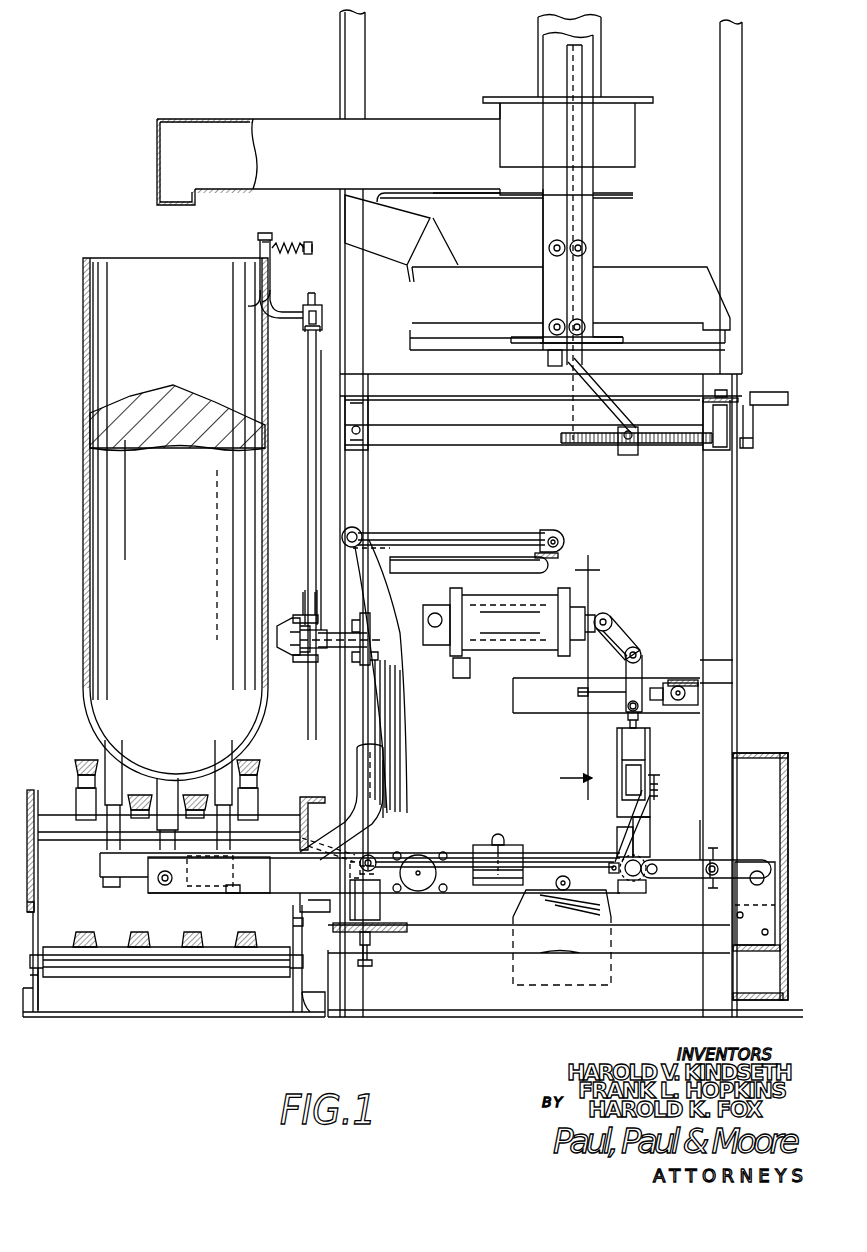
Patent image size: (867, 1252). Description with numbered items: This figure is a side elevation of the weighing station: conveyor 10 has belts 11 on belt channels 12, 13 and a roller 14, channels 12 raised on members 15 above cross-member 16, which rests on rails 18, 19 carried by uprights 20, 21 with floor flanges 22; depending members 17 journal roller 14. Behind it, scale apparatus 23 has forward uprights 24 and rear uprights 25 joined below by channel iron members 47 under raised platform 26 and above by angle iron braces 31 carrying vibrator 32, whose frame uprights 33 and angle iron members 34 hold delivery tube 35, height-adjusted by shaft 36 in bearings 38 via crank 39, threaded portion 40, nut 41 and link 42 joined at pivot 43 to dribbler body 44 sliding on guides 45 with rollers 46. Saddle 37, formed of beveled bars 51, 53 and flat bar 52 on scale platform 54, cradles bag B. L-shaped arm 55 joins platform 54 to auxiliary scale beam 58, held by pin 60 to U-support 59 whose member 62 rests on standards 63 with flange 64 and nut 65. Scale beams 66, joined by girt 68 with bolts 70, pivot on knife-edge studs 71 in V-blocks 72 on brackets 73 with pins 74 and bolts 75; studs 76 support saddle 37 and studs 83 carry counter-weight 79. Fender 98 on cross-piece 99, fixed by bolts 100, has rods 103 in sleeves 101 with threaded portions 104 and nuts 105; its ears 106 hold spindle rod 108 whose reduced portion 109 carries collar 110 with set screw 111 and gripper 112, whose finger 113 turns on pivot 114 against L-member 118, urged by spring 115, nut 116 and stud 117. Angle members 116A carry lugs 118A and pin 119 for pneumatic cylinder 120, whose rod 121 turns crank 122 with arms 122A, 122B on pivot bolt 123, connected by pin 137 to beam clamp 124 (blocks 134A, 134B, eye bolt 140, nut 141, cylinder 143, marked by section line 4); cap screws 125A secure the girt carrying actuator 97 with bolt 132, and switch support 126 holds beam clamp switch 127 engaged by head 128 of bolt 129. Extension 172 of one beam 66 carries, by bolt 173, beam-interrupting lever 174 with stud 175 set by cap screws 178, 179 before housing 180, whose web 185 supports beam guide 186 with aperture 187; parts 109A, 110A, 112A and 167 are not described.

The conveyor 10 is at (150, 998).
The belts 11 is at (94, 930).
The belt channels 12 is at (75, 768).
The belt channels 13 is at (130, 812).
The supporting rollers 14 is at (83, 968).
The members 15 is at (80, 796).
The cross-member 16 is at (62, 830).
The depending members 17 is at (36, 912).
The rail 18 is at (32, 795).
The rail 19 is at (312, 800).
The uprights 20 is at (38, 984).
The uprights 21 is at (294, 985).
The supporting floor flange 22 is at (300, 1018).
The scale apparatus 23 is at (233, 896).
The forward uprights 24 is at (358, 480).
The rear uprights 25 is at (739, 510).
The raised platform 26 is at (494, 940).
The angle iron braces 31 is at (366, 394).
The vibrator or dribbler 32 is at (612, 96).
The uprights 33 is at (340, 50).
The angle iron members 34 is at (726, 376).
The delivery tube 35 is at (205, 119).
The horizontal shaft 36 is at (488, 438).
The saddle 37 is at (100, 858).
The bearings 38 is at (360, 440).
The crank 39 is at (782, 392).
The threaded portion 40 is at (660, 446).
The nut 41 is at (626, 455).
The link 42 is at (616, 416).
The pivot 43 is at (548, 358).
The dribbler body 44 is at (598, 267).
The fixed guides 45 is at (582, 78).
The anti-friction rollers 46 is at (584, 246).
The channel iron members 47 is at (462, 996).
The bar 51 is at (116, 765).
The bar 52 is at (168, 788).
The bar 53 is at (218, 778).
The scale platform 54 is at (135, 880).
The L-shaped arm 55 is at (402, 742).
The auxiliary scale beam 58 is at (466, 537).
The U-support 59 is at (486, 556).
The pin 60 is at (553, 536).
The open end member 62 is at (396, 552).
The cylindrical standards 63 is at (358, 748).
The flange 64 is at (395, 923).
The nut 65 is at (374, 962).
The scale beams 66 is at (462, 852).
The girt 68 is at (430, 858).
The bolts 70 is at (400, 853).
The studs 71 is at (374, 860).
The V-shaped blocks 72 is at (348, 893).
The brackets 73 is at (382, 899).
The pivot pins 74 is at (350, 870).
The bolts 75 is at (363, 961).
The knife edged studs 76 is at (165, 886).
The counter-weight 79 is at (533, 915).
The knife-edged studs 83 is at (566, 876).
The beam clamp switch actuator 97 is at (628, 852).
The fender 98 is at (277, 638).
The cross-piece 99 is at (368, 666).
The bolts 100 is at (360, 660).
The sleeves 101 is at (350, 631).
The supporting rods 103 is at (375, 641).
The threaded portion 104 is at (296, 652).
The nut 105 is at (304, 616).
The ears 106 is at (312, 614).
The spindle rod 108 is at (308, 533).
The reduced portion 109 is at (318, 345).
The box 109A is at (518, 858).
The collar 110 is at (324, 313).
The rod 110A is at (536, 862).
The set screw 111 is at (308, 332).
The gripper 112 is at (258, 269).
The knob 112A is at (500, 848).
The finger 113 is at (248, 306).
The pivot 114 is at (263, 233).
The spring 115 is at (290, 245).
The nut 116 is at (311, 254).
The angle members 116A is at (688, 636).
The stud 117 is at (313, 250).
The L-member 118 is at (271, 278).
The upending lug 118A is at (430, 618).
The pin 119 is at (438, 614).
The pneumatic cylinder 120 is at (524, 604).
The rod 121 is at (606, 612).
The crank 122 is at (624, 648).
The arms 122A is at (628, 628).
The arms 122B is at (632, 670).
The pivot bolt 123 is at (636, 650).
The beam clamp 124 is at (616, 748).
The cap screws 125A is at (641, 866).
The switch support 126 is at (690, 678).
The beam clamp switch 127 is at (700, 692).
The head 128 is at (690, 680).
The bolt 129 is at (585, 691).
The adjustable bolt 132 is at (662, 780).
The solid block 134A is at (630, 893).
The solid block 134B is at (641, 745).
The pin 137 is at (628, 709).
The eye bolt 140 is at (640, 719).
The nut 141 is at (638, 724).
The pneumatic cylinder 143 is at (632, 782).
The plate 167 is at (640, 852).
The extending portion 172 is at (702, 858).
The bolt 173 is at (656, 876).
The beam-interrupting lever 174 is at (766, 870).
The stud 175 is at (720, 866).
The cap screw 178 is at (716, 850).
The cap screw 179 is at (718, 890).
The housing 180 is at (770, 757).
The supporting web 185 is at (770, 953).
The beam guide 186 is at (782, 862).
The circular aperture 187 is at (764, 882).
The section line 4- 4 is at (597, 670).
The bag B is at (145, 523).